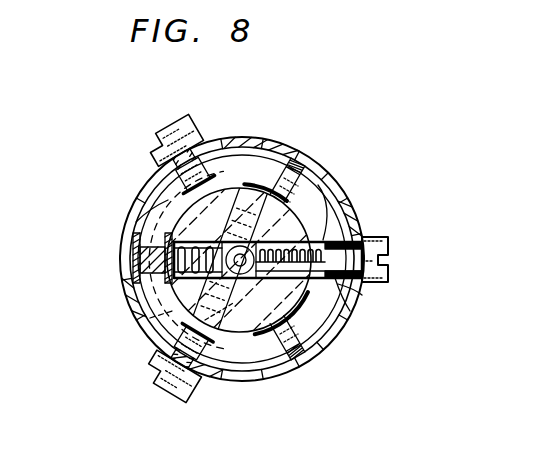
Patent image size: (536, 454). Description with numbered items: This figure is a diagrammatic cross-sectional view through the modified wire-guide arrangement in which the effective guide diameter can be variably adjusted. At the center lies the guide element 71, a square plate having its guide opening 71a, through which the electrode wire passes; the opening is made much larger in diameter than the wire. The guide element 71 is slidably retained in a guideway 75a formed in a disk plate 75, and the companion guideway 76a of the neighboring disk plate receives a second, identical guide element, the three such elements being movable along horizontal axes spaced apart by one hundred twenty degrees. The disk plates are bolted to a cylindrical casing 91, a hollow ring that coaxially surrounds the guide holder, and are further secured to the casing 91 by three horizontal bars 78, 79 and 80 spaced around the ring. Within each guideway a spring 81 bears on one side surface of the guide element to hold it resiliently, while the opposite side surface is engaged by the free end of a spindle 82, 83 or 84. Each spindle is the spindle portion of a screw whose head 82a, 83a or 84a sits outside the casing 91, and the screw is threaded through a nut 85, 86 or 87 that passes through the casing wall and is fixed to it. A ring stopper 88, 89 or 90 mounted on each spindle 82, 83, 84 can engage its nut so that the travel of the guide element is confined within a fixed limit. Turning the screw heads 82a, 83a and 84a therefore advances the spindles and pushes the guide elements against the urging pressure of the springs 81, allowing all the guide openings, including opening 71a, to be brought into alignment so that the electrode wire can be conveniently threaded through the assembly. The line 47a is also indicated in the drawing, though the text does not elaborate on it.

The guide line 47a is at (148, 319).
The guide element 71 is at (242, 246).
The guide opening 71a is at (222, 333).
The disk plate 75 is at (136, 222).
The guideway 75a is at (352, 302).
The guideway 76a is at (125, 200).
The horizontal bar 78 is at (134, 256).
The horizontal bar 79 is at (301, 372).
The horizontal bar 80 is at (322, 172).
The spring 81 is at (340, 330).
The spindle 82 is at (345, 206).
The screw head 82a is at (392, 247).
The spindle 83 is at (175, 196).
The screw head 83a is at (194, 130).
The spindle 84 is at (160, 345).
The screw head 84a is at (158, 374).
The nut 85 is at (368, 290).
The nut 86 is at (168, 180).
The nut 87 is at (204, 384).
The ring stopper 88 is at (365, 228).
The ring stopper 89 is at (218, 152).
The ring stopper 90 is at (230, 382).
The cylindrical casing 91 is at (289, 150).